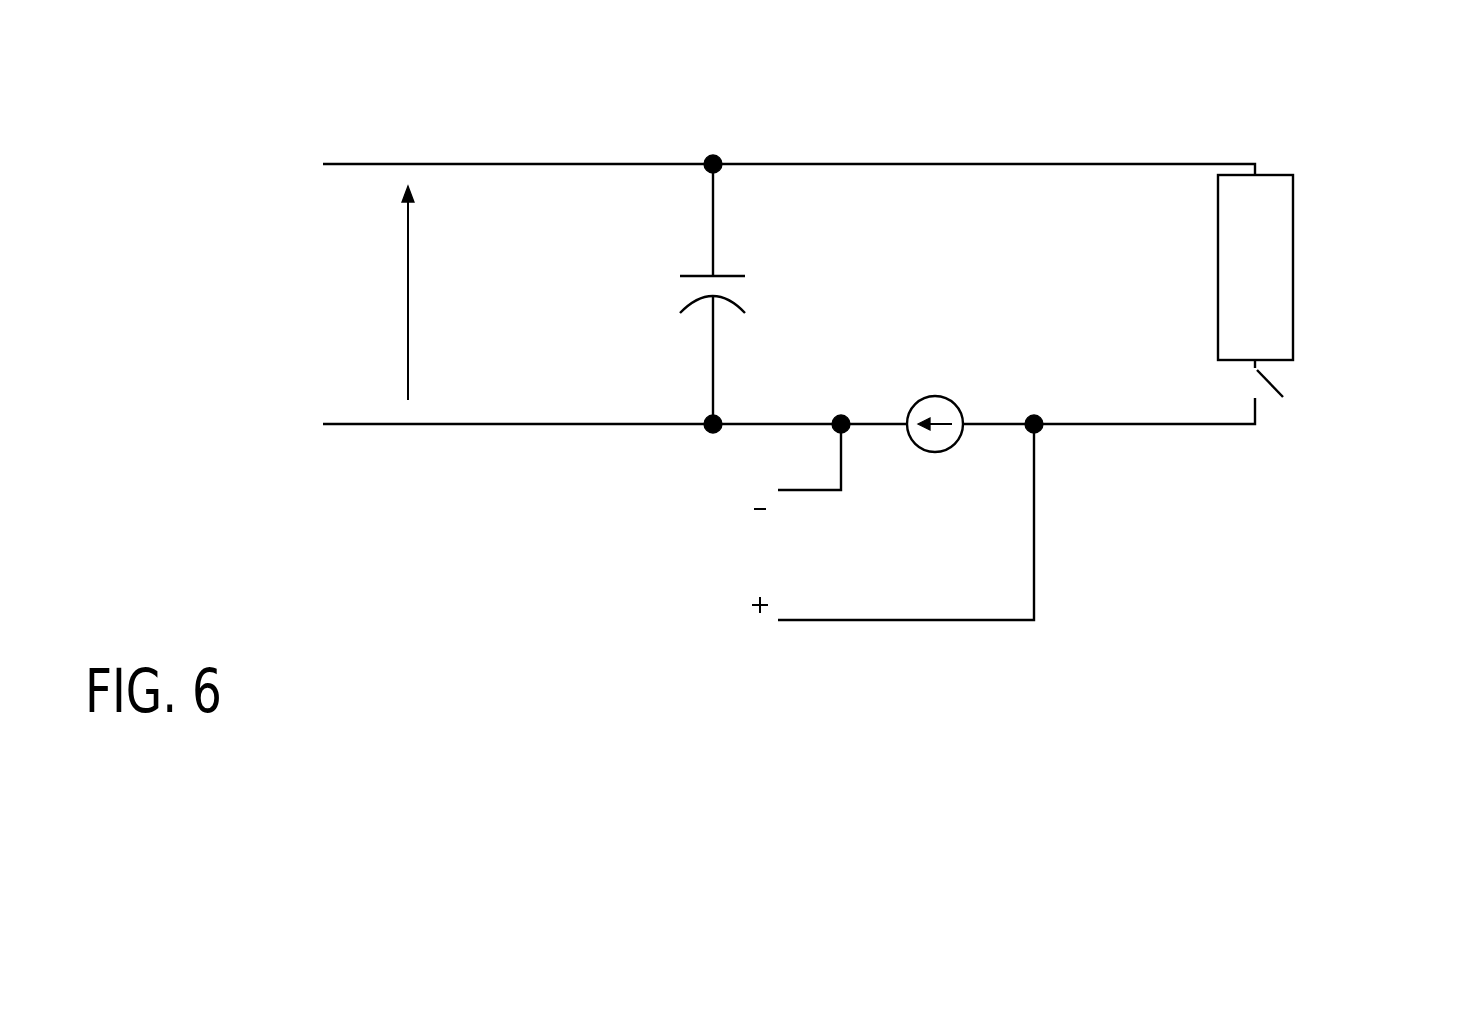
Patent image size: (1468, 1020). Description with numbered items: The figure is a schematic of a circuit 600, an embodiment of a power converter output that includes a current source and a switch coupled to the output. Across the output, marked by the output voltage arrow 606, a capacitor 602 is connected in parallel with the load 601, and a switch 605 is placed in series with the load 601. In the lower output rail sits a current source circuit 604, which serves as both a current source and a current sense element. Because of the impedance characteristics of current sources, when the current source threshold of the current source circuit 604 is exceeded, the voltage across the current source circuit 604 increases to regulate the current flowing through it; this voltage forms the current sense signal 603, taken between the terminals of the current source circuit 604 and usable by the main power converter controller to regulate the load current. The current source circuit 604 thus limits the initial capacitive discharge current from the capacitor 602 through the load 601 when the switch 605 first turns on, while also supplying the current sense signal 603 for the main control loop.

The circuit 600 is at (198, 75).
The load 601 is at (1305, 278).
The capacitor 602 is at (695, 262).
The current sense signal 603 is at (602, 517).
The current source circuit 604 is at (935, 465).
The switch 605 is at (1290, 403).
The output voltage Vout 606 is at (290, 283).